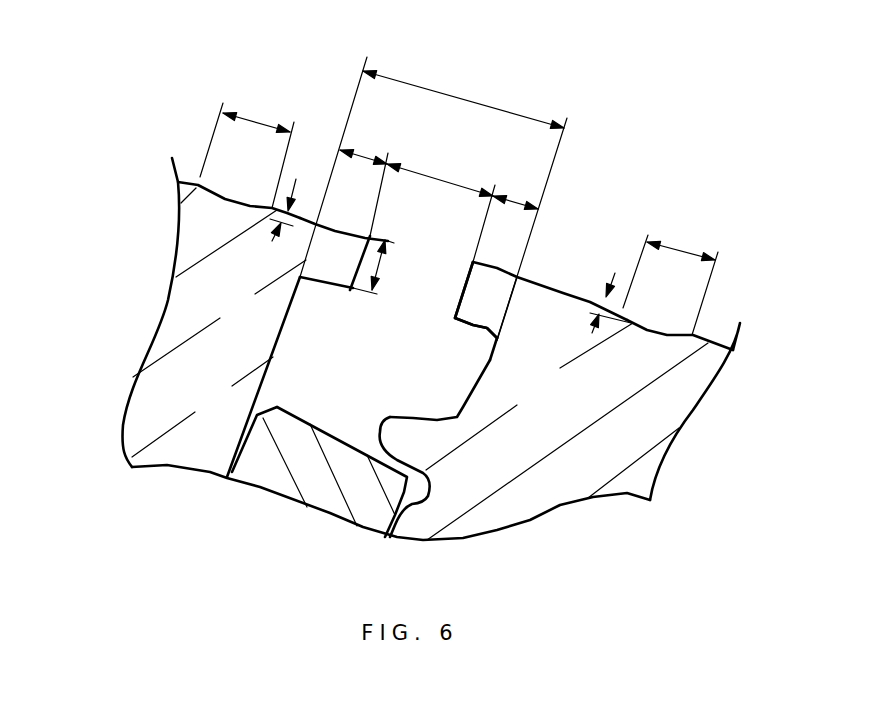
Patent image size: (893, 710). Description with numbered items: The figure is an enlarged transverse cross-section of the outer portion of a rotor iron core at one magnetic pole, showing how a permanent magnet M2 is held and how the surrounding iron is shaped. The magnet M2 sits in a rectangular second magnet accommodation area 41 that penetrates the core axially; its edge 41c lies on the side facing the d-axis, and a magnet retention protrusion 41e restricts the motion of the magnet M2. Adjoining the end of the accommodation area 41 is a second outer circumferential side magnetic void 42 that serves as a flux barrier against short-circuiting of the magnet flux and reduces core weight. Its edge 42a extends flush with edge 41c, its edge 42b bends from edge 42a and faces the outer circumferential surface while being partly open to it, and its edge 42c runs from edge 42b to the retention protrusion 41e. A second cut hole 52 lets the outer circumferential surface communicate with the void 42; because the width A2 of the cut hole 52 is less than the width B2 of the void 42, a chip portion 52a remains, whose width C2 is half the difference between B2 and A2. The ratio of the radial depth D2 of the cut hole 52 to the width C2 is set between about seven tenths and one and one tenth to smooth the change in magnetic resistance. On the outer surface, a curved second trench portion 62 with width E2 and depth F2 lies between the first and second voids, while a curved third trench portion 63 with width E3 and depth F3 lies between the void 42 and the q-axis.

The second magnet accommodation area 41 is at (231, 461).
The edge of second magnet accommodation area 41c is at (252, 416).
The magnet retention protrusion 41e is at (392, 430).
The second outer circumferential side magnetic void 42 is at (382, 377).
The edge of second outer circumferential side magnetic void 42a is at (283, 332).
The edge of second outer circumferential side magnetic void 42b is at (330, 283).
The edge of second outer circumferential side magnetic void 42c is at (462, 402).
The second cut hole 52 is at (463, 290).
The chip portion 52a is at (349, 240).
The second trench portion 62 is at (237, 204).
The third trench portion 63 is at (660, 333).
The permanent magnet M2 is at (273, 477).
The width of second cut hole A2 is at (440, 175).
The width of second outer circumferential side magnetic void B2 is at (478, 104).
The width of chip portion C2 is at (364, 156).
The depth of second cut hole D2 is at (380, 265).
The width of second trench portion E2 is at (246, 120).
The width of third trench portion E3 is at (672, 249).
The depth of second trench portion F2 is at (294, 207).
The depth of third trench portion F3 is at (605, 306).